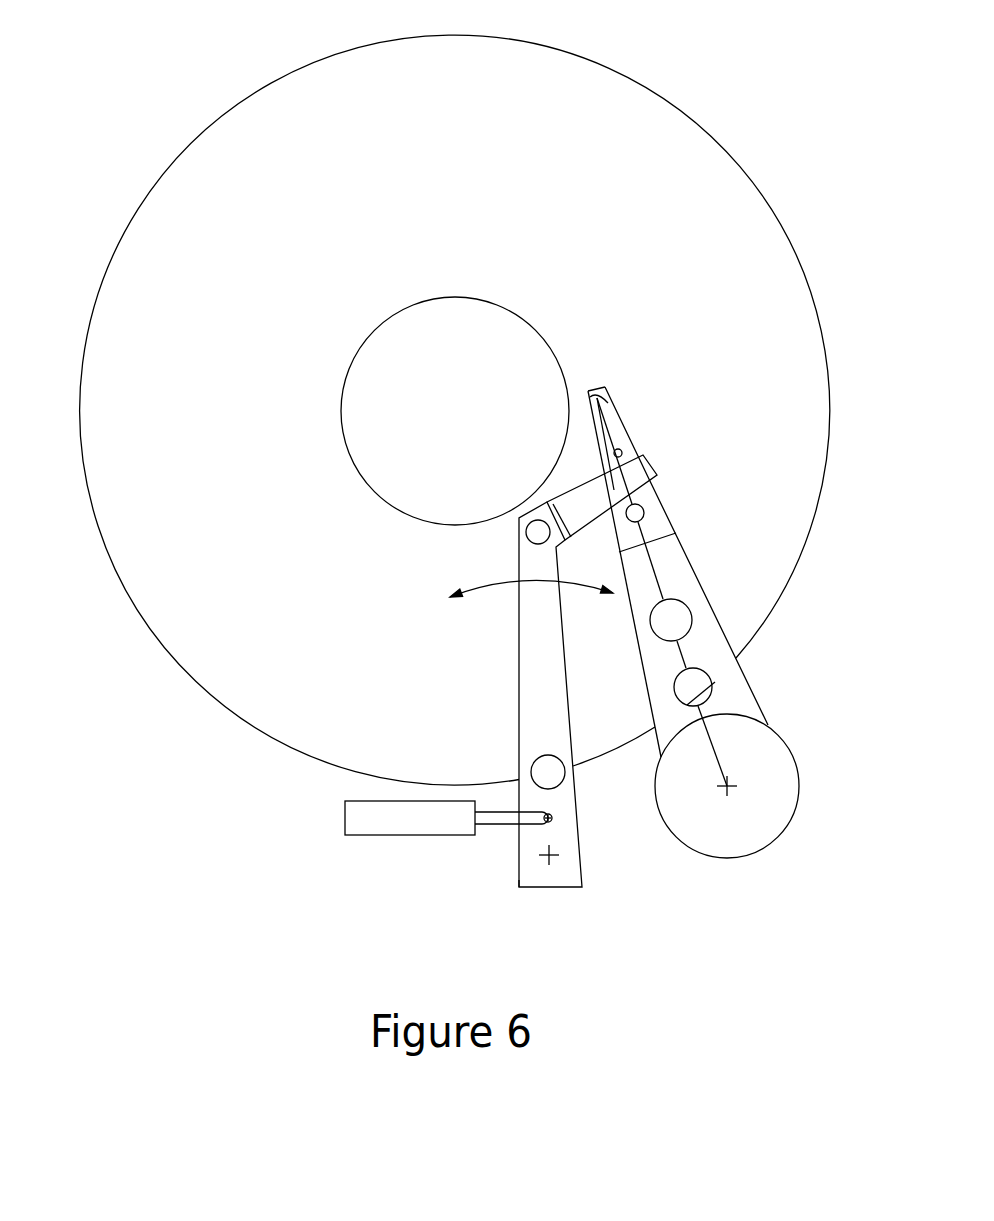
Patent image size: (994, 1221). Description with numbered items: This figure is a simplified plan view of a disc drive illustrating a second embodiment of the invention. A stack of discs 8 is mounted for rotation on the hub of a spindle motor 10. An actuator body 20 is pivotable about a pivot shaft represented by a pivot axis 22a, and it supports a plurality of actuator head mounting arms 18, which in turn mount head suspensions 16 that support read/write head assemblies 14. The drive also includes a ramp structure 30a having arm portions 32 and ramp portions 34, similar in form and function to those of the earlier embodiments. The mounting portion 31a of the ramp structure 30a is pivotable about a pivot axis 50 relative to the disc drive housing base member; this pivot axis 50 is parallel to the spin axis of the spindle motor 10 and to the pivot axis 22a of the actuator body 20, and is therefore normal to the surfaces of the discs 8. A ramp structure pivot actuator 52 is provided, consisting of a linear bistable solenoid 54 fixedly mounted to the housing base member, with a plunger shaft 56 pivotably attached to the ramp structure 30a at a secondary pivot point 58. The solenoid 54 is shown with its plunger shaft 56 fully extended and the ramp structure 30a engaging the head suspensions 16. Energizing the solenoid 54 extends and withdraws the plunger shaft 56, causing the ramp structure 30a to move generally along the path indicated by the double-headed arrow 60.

The stack of discs 8 is at (227, 618).
The spindle motor 10 is at (370, 412).
The read/write head assemblies 14 is at (600, 387).
The head suspensions 16 is at (623, 425).
The actuator head mounting arms 18 is at (675, 560).
The actuator body 20 is at (780, 758).
The pivot axis 22a is at (728, 786).
The ramp structure 30a is at (577, 785).
The mounting portion 31a is at (527, 862).
The arm portions 32 is at (519, 663).
The ramp portions 34 is at (598, 488).
The pivot axis 50 is at (552, 857).
The ramp structure pivot actuator 52 is at (368, 842).
The linear bistable solenoid 54 is at (362, 817).
The plunger shaft 56 is at (498, 818).
The secondary pivot point 58 is at (552, 823).
The double-headed arrow 60 is at (483, 580).